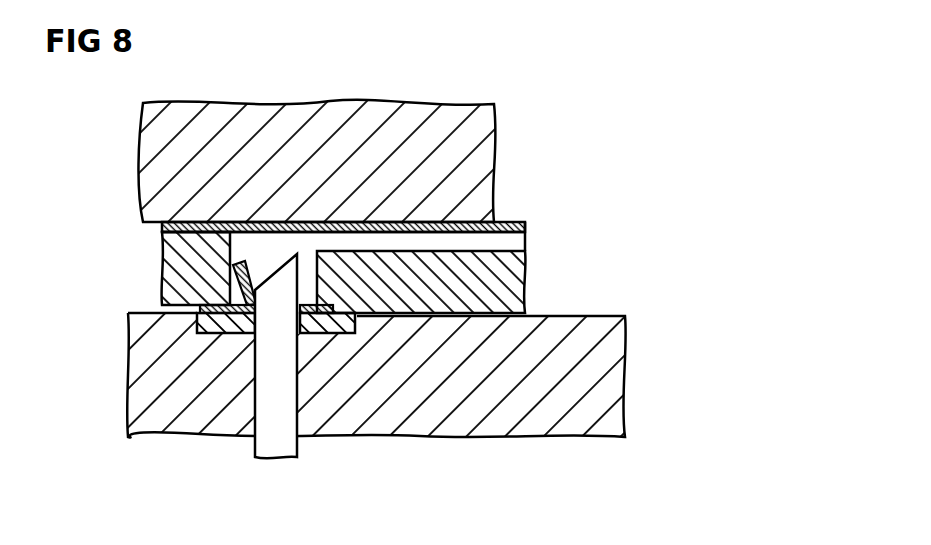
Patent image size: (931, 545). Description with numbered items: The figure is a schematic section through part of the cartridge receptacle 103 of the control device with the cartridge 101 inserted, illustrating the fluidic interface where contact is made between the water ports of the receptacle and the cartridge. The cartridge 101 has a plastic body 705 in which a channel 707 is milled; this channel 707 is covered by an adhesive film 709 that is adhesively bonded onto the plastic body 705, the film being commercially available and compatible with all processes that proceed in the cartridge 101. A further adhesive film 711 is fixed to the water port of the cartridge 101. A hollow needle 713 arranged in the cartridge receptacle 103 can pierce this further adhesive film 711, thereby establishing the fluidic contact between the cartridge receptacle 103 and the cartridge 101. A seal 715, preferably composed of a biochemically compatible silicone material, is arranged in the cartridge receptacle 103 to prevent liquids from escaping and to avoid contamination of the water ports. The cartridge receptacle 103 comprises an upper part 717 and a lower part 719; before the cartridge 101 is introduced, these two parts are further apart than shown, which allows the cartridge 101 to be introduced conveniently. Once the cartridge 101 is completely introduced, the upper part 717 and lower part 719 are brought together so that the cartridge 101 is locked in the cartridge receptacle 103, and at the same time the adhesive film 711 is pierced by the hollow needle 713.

The cartridge 101 is at (117, 245).
The cartridge receptacle 103 is at (522, 144).
The plastic body 705 is at (515, 273).
The channel 707 is at (513, 243).
The adhesive film 709 is at (523, 226).
The further adhesive film 711 is at (248, 280).
The hollow needle 713 is at (277, 448).
The seal 715 is at (323, 327).
The upper part 717 is at (340, 117).
The lower part 719 is at (137, 362).